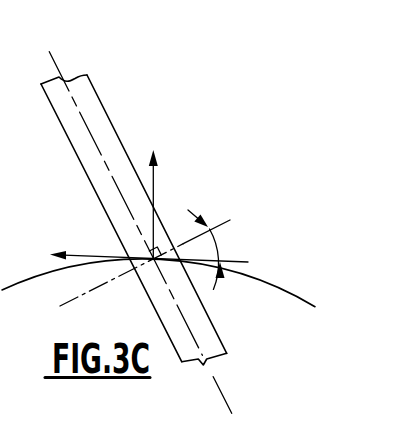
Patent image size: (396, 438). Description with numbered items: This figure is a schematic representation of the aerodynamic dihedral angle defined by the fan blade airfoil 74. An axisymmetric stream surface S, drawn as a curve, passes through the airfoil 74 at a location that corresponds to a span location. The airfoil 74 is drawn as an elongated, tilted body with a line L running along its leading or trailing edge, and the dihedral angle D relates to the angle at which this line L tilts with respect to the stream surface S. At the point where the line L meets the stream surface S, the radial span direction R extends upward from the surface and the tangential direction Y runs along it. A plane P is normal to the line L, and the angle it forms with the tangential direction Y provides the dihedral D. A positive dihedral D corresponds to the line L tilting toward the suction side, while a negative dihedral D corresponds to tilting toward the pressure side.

The fan blade airfoil 74 is at (126, 115).
The line along the leading or trailing edge L is at (222, 395).
The radial span direction R is at (153, 182).
The tangential direction Y is at (141, 250).
The plane normal to the line P is at (230, 220).
The contact point on surface X is at (153, 259).
The aerodynamic dihedral angle D is at (220, 243).
The axisymmetric stream surface S is at (279, 277).